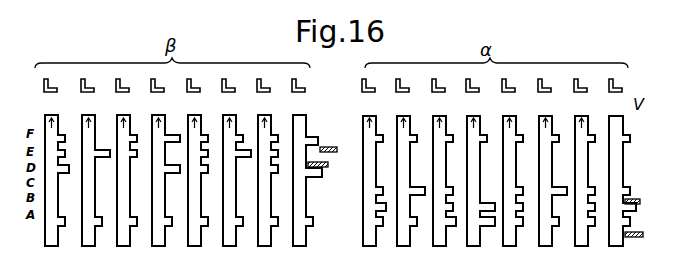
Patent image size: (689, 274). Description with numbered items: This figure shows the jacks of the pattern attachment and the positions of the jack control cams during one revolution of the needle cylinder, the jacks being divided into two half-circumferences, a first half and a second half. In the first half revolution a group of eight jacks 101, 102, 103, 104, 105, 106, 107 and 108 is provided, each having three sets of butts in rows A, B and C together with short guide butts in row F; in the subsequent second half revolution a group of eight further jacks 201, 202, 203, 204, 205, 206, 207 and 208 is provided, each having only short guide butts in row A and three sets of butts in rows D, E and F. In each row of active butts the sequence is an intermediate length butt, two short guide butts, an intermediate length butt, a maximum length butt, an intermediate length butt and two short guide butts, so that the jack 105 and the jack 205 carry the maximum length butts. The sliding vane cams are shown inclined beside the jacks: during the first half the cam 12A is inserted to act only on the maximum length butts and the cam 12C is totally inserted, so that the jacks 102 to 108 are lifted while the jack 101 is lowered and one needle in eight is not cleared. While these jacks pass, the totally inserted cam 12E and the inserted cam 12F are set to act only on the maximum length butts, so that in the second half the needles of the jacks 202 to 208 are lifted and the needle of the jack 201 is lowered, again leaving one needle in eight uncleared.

The jack 201 is at (304, 190).
The jack 202 is at (265, 190).
The jack 203 is at (234, 190).
The jack 204 is at (195, 190).
The jack 205 is at (163, 190).
The jack 206 is at (124, 190).
The jack 207 is at (92, 190).
The jack 208 is at (54, 190).
The jack 101 is at (619, 191).
The jack 102 is at (582, 191).
The jack 103 is at (550, 191).
The jack 104 is at (510, 191).
The jack 105 is at (478, 191).
The jack 106 is at (441, 191).
The jack 107 is at (408, 191).
The jack 108 is at (371, 191).
The vane cam 12F is at (327, 146).
The vane cam 12E is at (327, 168).
The vane cam 12C is at (628, 198).
The vane cam 12A is at (640, 232).